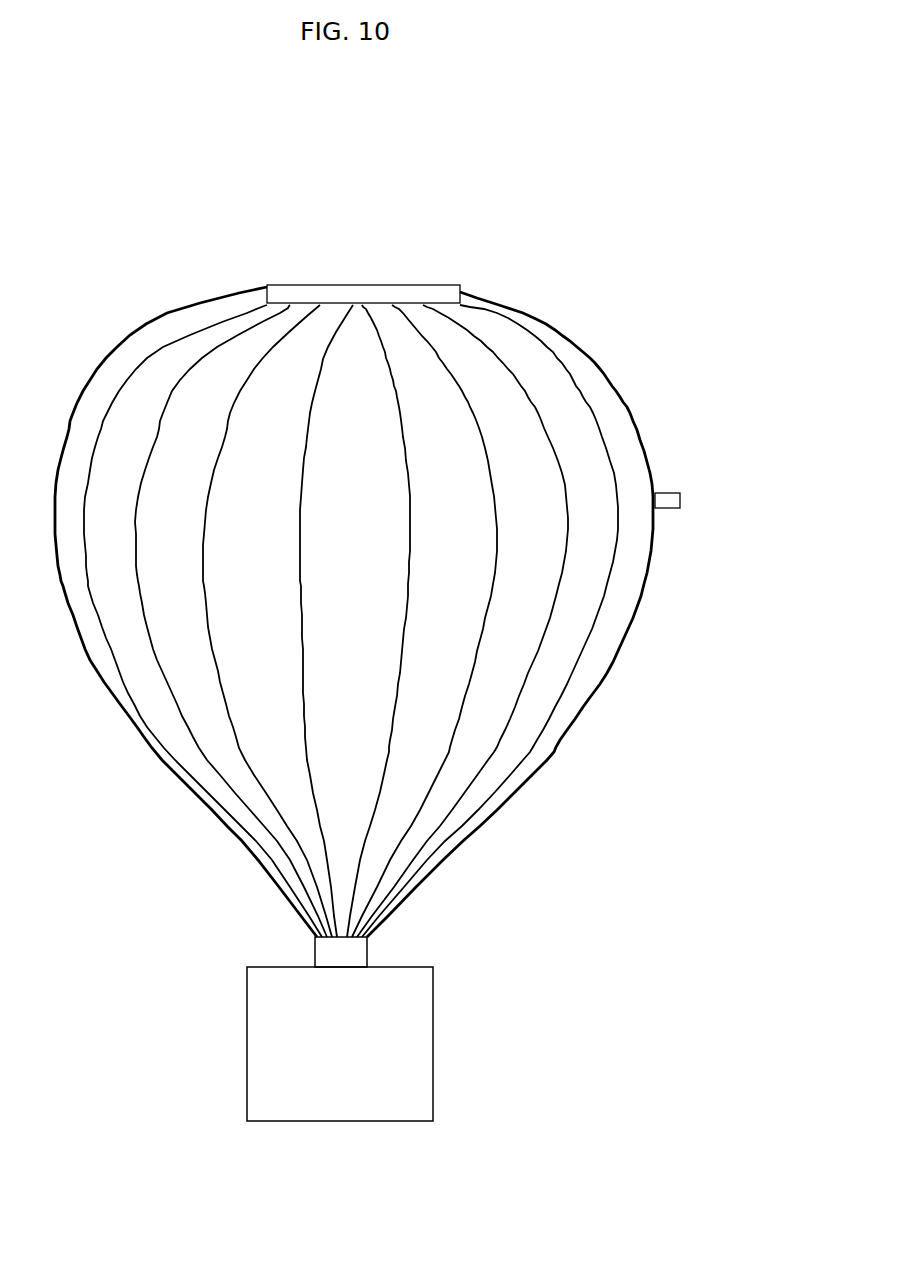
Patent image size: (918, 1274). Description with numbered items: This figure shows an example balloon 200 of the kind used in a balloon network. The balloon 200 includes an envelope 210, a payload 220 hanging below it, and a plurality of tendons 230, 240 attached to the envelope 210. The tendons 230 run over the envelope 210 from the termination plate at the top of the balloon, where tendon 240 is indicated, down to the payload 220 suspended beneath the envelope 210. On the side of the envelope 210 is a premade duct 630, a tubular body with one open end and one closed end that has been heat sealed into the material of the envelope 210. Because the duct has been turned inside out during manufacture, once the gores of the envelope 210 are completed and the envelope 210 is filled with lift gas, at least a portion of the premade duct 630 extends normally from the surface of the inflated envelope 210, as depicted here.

The balloon 200 is at (763, 44).
The envelope 210 is at (632, 674).
The payload 220 is at (433, 1043).
The tendons 230 is at (567, 515).
The tendons 240 is at (292, 285).
The premade duct 630 is at (680, 508).